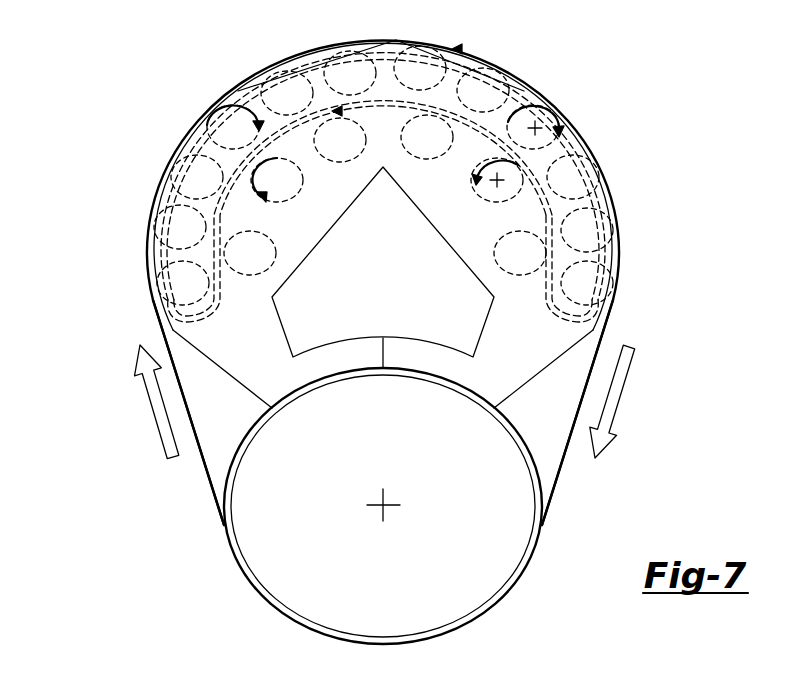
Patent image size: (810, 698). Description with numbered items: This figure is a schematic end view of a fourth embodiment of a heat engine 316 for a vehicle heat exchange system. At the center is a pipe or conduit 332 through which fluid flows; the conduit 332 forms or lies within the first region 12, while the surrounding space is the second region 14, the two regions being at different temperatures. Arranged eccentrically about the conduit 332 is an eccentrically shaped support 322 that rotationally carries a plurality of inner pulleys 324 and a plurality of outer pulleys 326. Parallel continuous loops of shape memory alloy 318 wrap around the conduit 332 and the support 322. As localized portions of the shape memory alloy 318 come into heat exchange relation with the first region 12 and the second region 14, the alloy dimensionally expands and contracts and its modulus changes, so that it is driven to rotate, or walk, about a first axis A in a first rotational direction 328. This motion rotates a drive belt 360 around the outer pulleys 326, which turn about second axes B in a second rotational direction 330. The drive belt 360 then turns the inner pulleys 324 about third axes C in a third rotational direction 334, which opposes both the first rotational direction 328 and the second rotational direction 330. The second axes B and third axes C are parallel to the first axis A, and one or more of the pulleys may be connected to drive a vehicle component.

The first region 12 is at (370, 591).
The second region 14 is at (586, 99).
The heat engine 316 is at (108, 121).
The shape memory alloy 318 is at (211, 492).
The support 322 is at (183, 336).
The inner pulleys 324 is at (353, 162).
The outer pulleys 326 is at (326, 52).
The first rotational direction 328 is at (152, 418).
The second rotational direction 330 is at (220, 114).
The conduit 332 is at (537, 500).
The third rotational direction 334 is at (477, 184).
The drive belt 360 is at (163, 209).
The first axis A is at (381, 507).
The second axes B is at (529, 118).
The third axes C is at (493, 188).